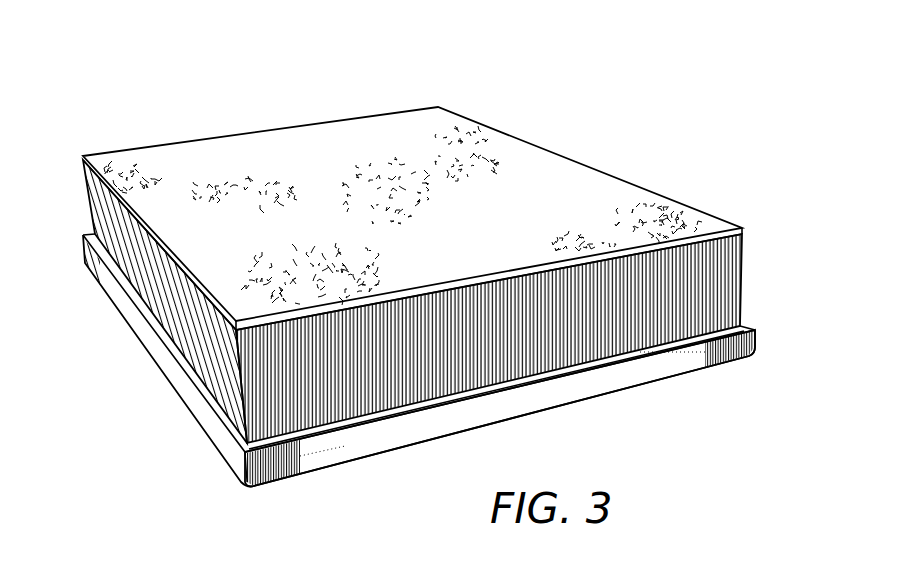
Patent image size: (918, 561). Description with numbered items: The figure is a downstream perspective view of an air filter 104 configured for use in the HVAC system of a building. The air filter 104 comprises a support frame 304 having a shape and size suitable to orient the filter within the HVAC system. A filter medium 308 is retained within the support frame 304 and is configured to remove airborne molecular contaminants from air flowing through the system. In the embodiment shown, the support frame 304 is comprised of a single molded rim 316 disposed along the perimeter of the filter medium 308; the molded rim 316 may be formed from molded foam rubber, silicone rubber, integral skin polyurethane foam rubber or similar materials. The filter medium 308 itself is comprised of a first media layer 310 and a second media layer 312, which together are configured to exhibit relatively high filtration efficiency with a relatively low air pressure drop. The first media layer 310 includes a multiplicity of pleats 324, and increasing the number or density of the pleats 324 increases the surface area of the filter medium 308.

The air filter 104 is at (243, 83).
The support frame 304 is at (150, 371).
The filter medium 308 is at (531, 140).
The first media layer 310 is at (140, 278).
The second media layer 312 is at (122, 157).
The molded rim 316 is at (625, 373).
The pleats 324 is at (744, 272).